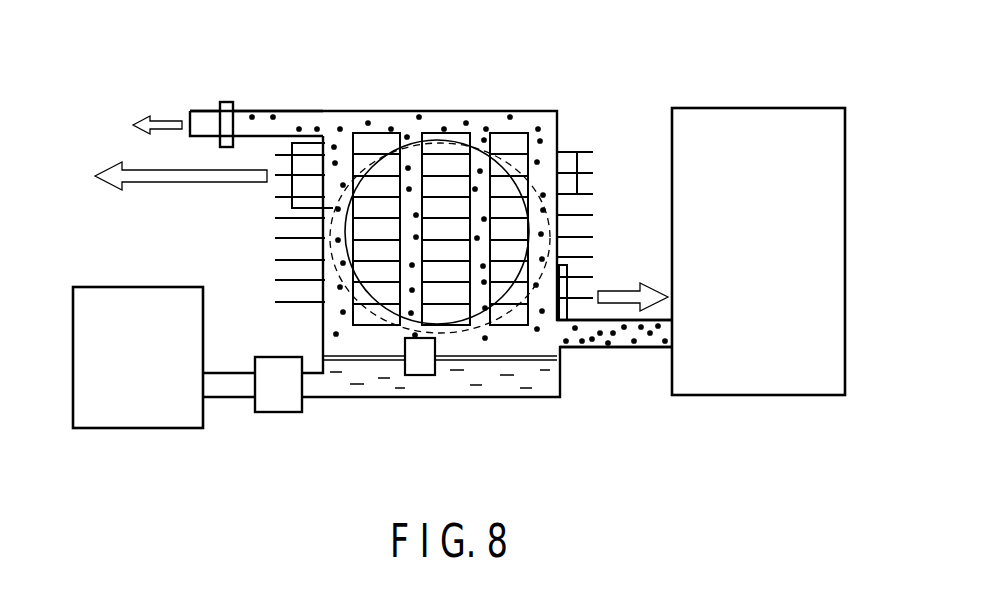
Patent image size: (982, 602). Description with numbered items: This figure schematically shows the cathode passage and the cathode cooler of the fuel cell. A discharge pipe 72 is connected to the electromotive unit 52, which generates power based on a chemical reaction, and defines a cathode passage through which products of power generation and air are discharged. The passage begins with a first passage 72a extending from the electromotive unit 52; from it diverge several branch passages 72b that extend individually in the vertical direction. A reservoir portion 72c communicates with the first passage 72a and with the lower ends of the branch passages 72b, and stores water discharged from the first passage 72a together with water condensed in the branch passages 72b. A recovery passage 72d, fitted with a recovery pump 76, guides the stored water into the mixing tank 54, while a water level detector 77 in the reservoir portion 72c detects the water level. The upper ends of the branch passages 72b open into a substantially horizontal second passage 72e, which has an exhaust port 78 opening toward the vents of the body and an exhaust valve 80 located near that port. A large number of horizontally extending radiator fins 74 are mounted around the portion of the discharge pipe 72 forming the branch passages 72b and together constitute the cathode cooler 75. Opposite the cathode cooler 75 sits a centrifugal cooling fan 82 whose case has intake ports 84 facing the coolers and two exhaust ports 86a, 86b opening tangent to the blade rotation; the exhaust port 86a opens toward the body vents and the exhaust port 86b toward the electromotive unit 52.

The electromotive unit 52 is at (706, 375).
The mixing tank 54 is at (103, 415).
The discharge pipe 72 is at (568, 70).
The first passage 72a is at (640, 348).
The branch passages 72b is at (470, 135).
The reservoir portion 72c is at (512, 385).
The recovery passage 72d is at (230, 405).
The second passage 72e is at (335, 120).
The radiator fins 74 is at (580, 152).
The cathode cooler 75 is at (248, 243).
The recovery pump 76 is at (282, 420).
The water level detector 77 is at (418, 365).
The exhaust port 78 is at (190, 113).
The exhaust valve 80 is at (226, 100).
The cooling fan 82 is at (372, 268).
The intake ports 84 is at (548, 225).
The exhaust port 86a is at (276, 160).
The exhaust port 86b is at (580, 310).